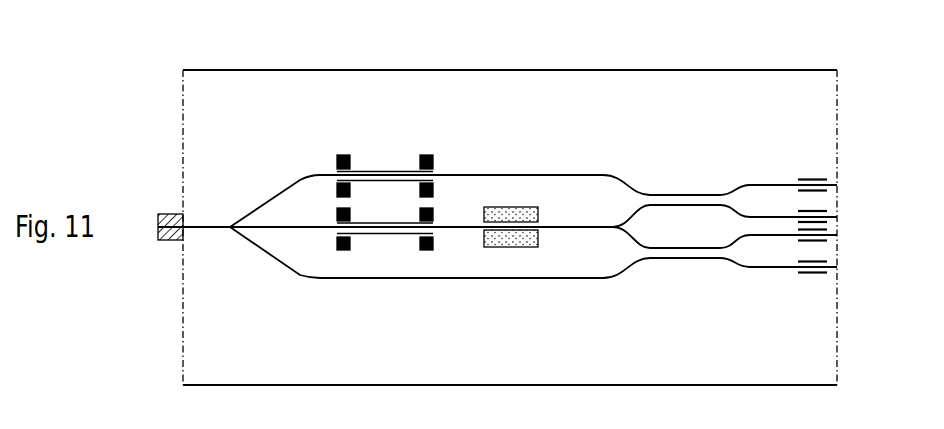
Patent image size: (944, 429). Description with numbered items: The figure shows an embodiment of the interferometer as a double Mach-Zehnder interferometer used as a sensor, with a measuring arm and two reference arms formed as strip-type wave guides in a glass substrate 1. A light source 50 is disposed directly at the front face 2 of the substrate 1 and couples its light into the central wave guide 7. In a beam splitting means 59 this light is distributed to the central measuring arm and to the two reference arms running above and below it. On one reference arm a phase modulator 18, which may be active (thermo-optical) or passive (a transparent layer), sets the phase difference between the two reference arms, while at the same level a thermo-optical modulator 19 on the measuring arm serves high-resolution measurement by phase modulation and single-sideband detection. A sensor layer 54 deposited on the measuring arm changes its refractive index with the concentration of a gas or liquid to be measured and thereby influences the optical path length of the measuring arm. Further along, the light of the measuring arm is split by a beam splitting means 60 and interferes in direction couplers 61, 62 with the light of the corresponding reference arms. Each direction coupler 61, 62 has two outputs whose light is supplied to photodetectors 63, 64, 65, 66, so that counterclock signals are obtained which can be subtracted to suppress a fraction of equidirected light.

The glass substrate 1 is at (537, 72).
The front face of the substrate 2 is at (183, 100).
The wave guide 7 is at (210, 216).
The beam splitting means 59 is at (228, 240).
The light source 50 is at (160, 245).
The phase modulator 18 is at (340, 150).
The thermo-optical modulator 19 is at (334, 256).
The sensor layer 54 is at (504, 252).
The beam splitting means 60 is at (606, 218).
The direction coupler 61 is at (683, 194).
The direction coupler 62 is at (684, 263).
The photodetector 63 is at (818, 172).
The photodetector 64 is at (822, 207).
The photodetector 65 is at (822, 228).
The photodetector 66 is at (825, 280).